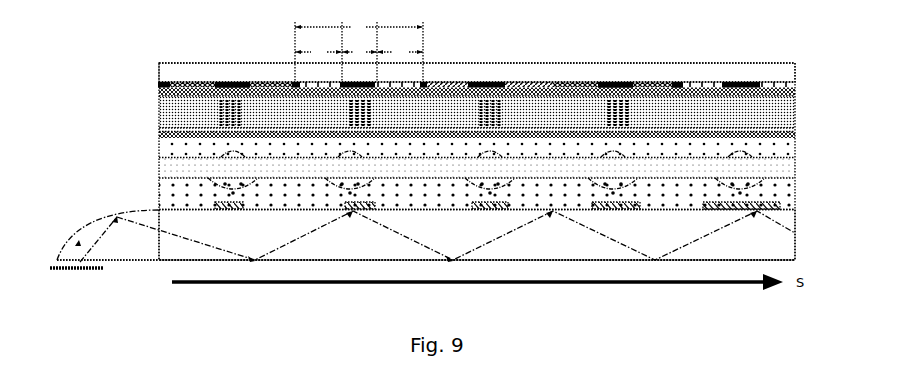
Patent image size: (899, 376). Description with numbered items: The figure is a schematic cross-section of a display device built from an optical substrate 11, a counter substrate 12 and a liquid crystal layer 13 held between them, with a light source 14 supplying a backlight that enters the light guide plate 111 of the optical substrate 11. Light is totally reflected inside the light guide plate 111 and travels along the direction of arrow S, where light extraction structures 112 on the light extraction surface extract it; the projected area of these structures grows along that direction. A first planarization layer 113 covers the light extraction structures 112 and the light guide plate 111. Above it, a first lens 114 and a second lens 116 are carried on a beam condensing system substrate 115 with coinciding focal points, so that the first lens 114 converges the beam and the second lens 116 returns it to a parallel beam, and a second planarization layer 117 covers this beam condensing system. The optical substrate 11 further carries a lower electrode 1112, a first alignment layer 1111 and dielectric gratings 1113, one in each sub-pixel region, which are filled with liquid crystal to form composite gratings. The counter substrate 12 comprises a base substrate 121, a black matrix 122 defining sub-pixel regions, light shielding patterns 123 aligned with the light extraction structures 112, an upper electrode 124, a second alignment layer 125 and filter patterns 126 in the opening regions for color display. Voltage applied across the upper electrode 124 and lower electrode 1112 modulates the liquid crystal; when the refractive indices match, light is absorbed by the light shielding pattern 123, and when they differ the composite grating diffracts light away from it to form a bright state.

The optical substrate 11 is at (455, 195).
The counter substrate 12 is at (481, 63).
The liquid crystal layer 13 is at (468, 112).
The light source 14 is at (80, 219).
The light guide plate 111 is at (797, 260).
The light extraction structures 112 is at (797, 232).
The first planarization layer 113 is at (797, 210).
The first lens 114 is at (790, 189).
The beam condensing system substrate 115 is at (785, 172).
The second lens 116 is at (790, 165).
The second planarization layer 117 is at (797, 157).
The base substrate 121 is at (797, 72).
The black matrix 122 is at (676, 80).
The light shielding pattern 123 is at (615, 81).
The upper electrode 124 is at (797, 87).
The second alignment layer 125 is at (797, 94).
The filter pattern 126 is at (197, 81).
The first alignment layer 1111 is at (797, 133).
The lower electrode 1112 is at (797, 138).
The dielectric grating 1113 is at (797, 112).